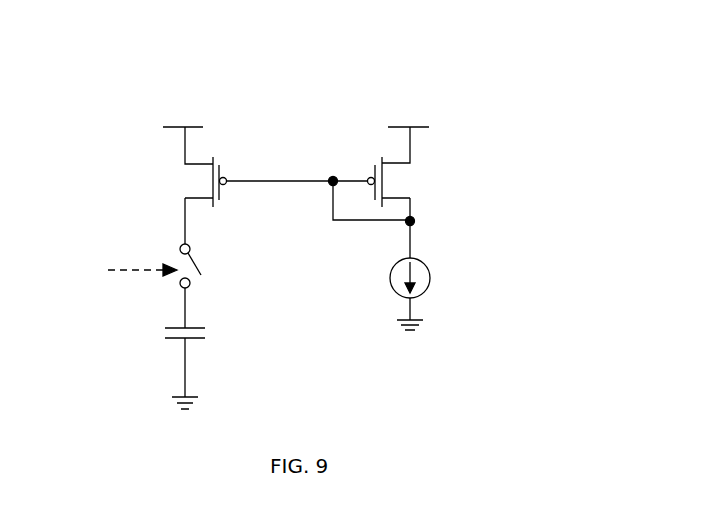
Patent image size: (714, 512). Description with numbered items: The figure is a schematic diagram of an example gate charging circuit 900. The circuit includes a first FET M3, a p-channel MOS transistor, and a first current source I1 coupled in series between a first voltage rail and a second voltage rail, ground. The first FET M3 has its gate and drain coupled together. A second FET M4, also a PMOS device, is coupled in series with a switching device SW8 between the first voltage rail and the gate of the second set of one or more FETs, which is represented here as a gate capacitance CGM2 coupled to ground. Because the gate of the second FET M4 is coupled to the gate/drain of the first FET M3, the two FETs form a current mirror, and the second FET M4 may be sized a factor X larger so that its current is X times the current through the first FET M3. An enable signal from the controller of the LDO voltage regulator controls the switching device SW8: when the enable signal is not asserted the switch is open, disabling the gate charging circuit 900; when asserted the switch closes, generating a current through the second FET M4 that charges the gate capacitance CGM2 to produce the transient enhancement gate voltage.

The gate charging circuit 900 is at (478, 84).
The second FET M4 is at (248, 171).
The first FET M3 is at (379, 178).
The first current source I1 is at (423, 294).
The switching device SW8 is at (140, 266).
The gate capacitance CGM2 is at (169, 348).